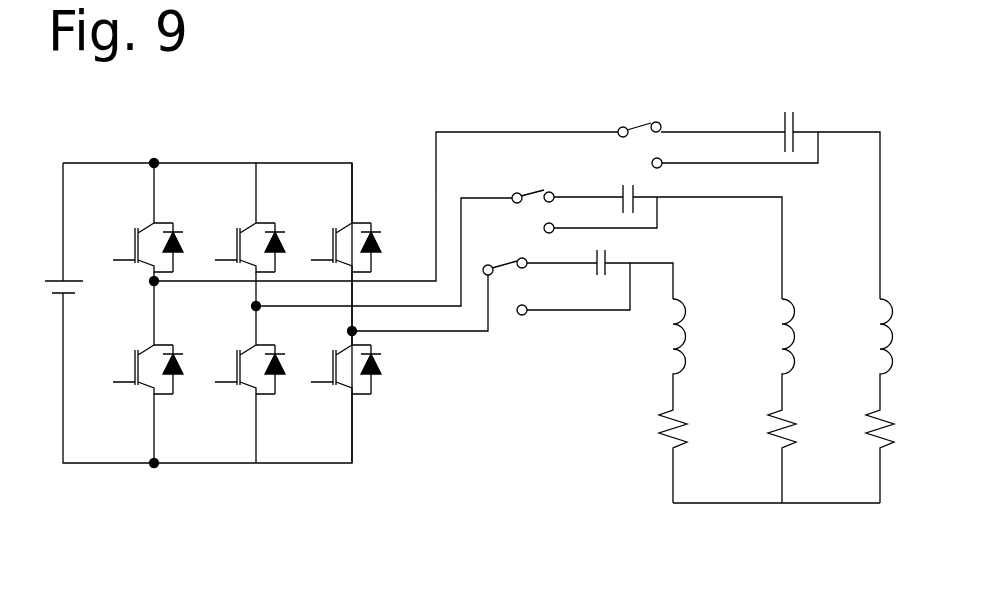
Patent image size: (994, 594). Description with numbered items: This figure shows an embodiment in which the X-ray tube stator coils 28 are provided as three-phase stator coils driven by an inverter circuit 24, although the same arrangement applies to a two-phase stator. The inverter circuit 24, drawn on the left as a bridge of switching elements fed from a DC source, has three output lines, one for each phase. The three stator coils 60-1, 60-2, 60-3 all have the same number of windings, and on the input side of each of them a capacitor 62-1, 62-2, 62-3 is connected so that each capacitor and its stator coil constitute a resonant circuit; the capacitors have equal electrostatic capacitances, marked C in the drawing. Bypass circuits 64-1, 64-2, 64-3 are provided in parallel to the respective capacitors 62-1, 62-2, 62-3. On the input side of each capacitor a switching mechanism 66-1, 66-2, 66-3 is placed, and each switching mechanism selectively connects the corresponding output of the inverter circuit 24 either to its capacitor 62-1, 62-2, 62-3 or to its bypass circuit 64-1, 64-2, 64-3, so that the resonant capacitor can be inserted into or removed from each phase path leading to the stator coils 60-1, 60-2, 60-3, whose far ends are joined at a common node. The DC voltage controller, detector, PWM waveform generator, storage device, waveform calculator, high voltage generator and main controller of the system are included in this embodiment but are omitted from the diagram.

The inverter circuit 24 is at (201, 162).
The X-ray tube stator coils 28 is at (881, 216).
The stator coil 60-1 is at (672, 338).
The stator coil 60-2 is at (781, 333).
The stator coil 60-3 is at (880, 332).
The capacitor 62-1 is at (594, 268).
The capacitor 62-2 is at (620, 184).
The capacitor 62-3 is at (797, 125).
The bypass circuit 64-1 is at (632, 296).
The bypass circuit 64-2 is at (659, 213).
The bypass circuit 64-3 is at (820, 148).
The switching mechanism 66-1 is at (502, 265).
The switching mechanism 66-2 is at (521, 188).
The switching mechanism 66-3 is at (638, 125).